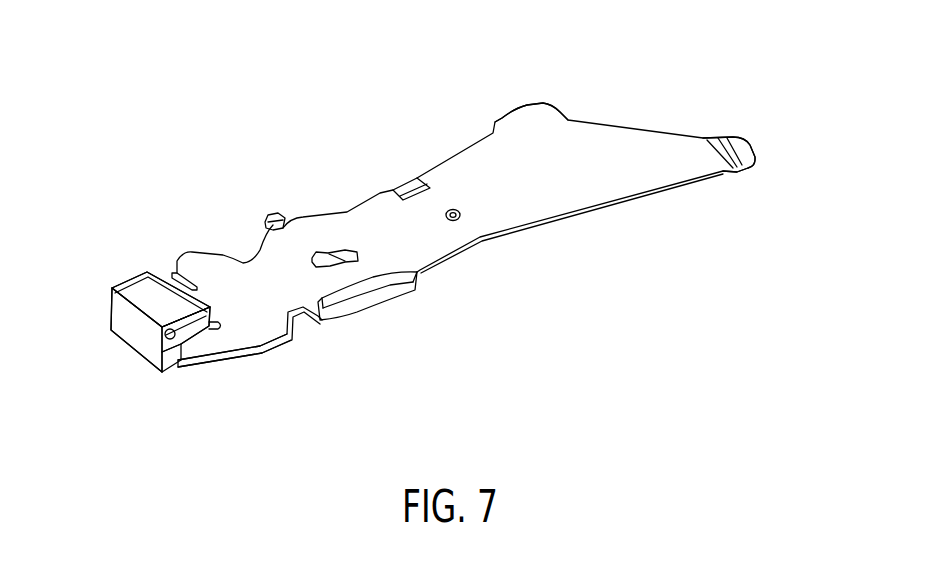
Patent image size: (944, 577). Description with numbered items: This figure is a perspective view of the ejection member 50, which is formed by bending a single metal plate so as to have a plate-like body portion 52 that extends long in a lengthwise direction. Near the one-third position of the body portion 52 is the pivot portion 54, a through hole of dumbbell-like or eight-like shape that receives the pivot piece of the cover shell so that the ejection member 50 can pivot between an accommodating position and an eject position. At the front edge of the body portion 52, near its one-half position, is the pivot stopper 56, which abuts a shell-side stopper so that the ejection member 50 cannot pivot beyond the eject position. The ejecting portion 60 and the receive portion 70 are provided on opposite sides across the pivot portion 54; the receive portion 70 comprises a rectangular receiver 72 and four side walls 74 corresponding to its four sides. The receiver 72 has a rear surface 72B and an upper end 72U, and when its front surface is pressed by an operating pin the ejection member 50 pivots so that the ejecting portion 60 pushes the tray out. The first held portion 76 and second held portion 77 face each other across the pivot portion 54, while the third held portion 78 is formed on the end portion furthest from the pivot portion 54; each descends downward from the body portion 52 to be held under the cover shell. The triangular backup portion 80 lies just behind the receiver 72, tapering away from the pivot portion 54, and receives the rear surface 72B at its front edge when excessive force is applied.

The ejection member 50 is at (333, 111).
The body portion 52 is at (600, 187).
The pivot portion 54 is at (320, 268).
The pivot stopper 56 is at (400, 186).
The ejecting portion 60 is at (515, 113).
The receive portion 70 is at (141, 277).
The receiver 72 is at (186, 329).
The rear surface 72B is at (203, 334).
The upper end 72U is at (160, 346).
The side walls 74 is at (118, 337).
The first held portion 76 is at (408, 297).
The second held portion 77 is at (273, 213).
The third held portion 78 is at (750, 147).
The backup portion 80 is at (203, 360).